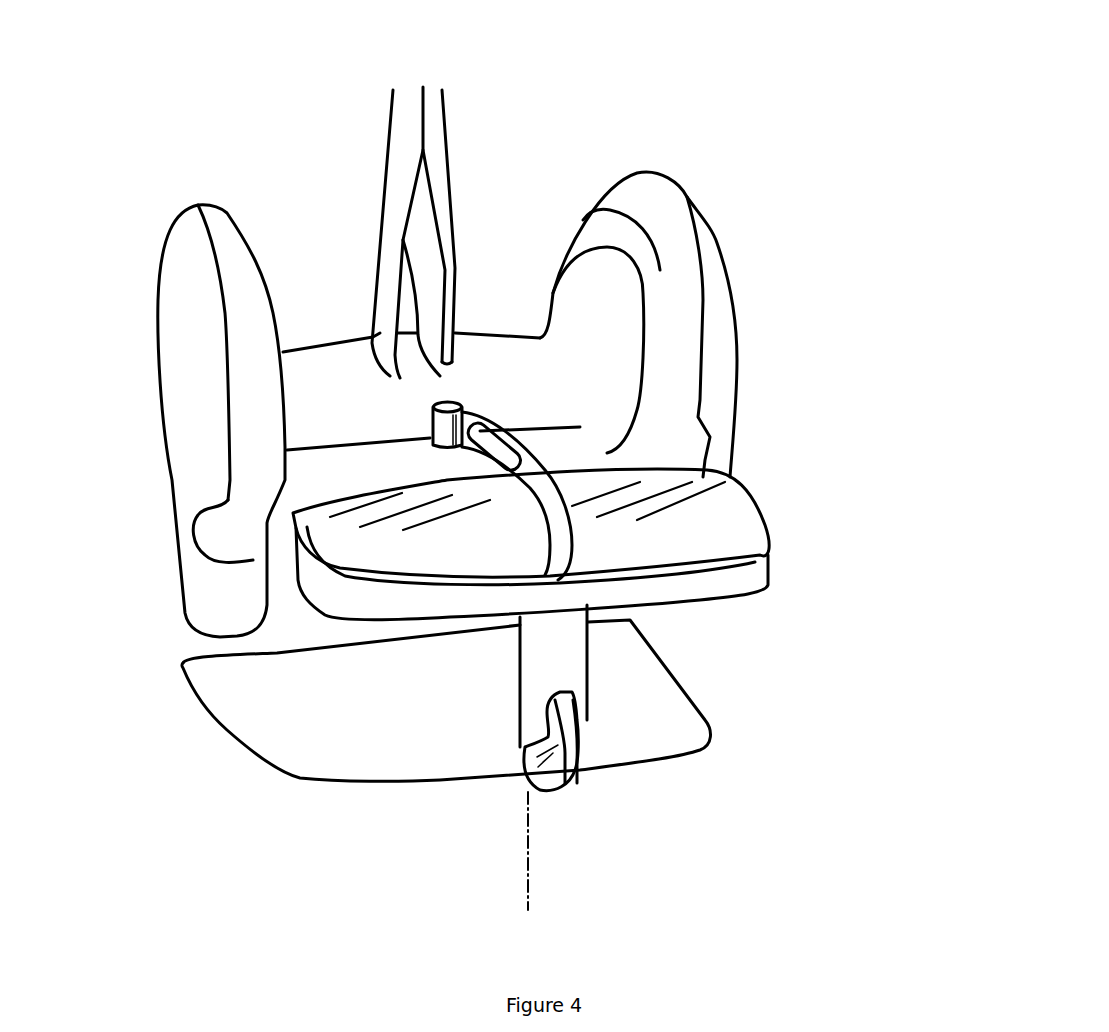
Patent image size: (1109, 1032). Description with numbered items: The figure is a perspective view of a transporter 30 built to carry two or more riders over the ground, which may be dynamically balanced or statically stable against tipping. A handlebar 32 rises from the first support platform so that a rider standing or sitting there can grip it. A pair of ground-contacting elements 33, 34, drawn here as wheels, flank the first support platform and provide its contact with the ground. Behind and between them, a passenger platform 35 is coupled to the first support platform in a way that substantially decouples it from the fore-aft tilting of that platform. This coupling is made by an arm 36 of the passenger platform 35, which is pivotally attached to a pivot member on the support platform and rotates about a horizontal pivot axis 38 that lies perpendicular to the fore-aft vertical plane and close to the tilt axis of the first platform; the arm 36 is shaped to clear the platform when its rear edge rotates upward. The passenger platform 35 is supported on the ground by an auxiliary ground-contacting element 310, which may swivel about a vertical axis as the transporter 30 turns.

The transporter 30 is at (628, 118).
The handlebar 32 is at (354, 131).
The ground-contacting element 33 is at (203, 340).
The ground-contacting element 34 is at (715, 357).
The passenger platform 35 is at (360, 492).
The arm 36 is at (493, 425).
The pivot axis 38 is at (528, 820).
The auxiliary ground-contacting element 310 is at (563, 788).